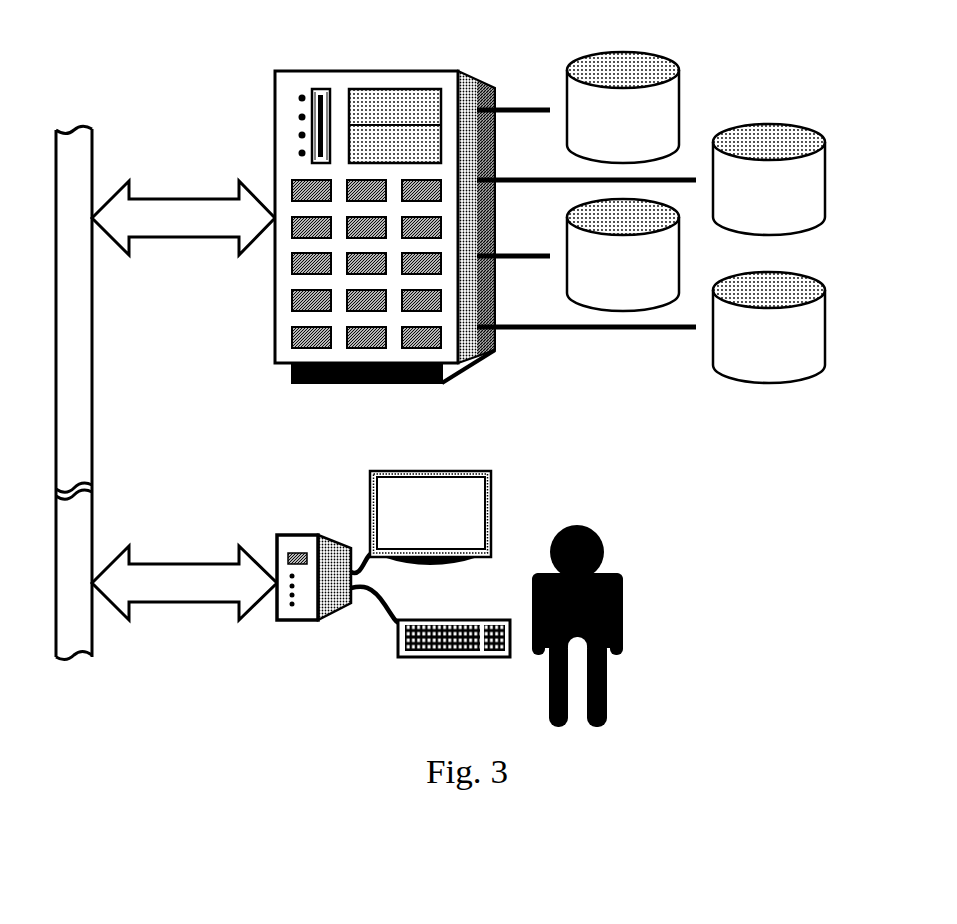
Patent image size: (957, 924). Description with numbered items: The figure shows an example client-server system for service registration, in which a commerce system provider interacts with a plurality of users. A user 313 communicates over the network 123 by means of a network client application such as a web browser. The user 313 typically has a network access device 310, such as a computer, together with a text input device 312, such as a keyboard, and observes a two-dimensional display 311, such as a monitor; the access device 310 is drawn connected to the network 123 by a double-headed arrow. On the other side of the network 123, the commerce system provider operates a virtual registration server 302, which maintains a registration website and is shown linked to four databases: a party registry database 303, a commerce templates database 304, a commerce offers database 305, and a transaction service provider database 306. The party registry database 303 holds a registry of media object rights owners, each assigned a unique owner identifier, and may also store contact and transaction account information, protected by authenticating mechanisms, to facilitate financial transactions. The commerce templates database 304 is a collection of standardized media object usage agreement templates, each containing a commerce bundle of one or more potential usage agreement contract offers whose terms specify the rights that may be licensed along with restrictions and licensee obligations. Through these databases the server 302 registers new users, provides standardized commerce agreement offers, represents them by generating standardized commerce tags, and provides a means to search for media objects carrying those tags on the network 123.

The network 123 is at (92, 366).
The virtual registration server 302 is at (368, 72).
The party registry database 303 is at (680, 126).
The commerce templates database 304 is at (826, 198).
The commerce offers database 305 is at (680, 272).
The transaction service provider database 306 is at (827, 345).
The network access device 310 is at (277, 534).
The two-dimensional display 311 is at (463, 472).
The text input device 312 is at (400, 655).
The user 313 is at (623, 598).